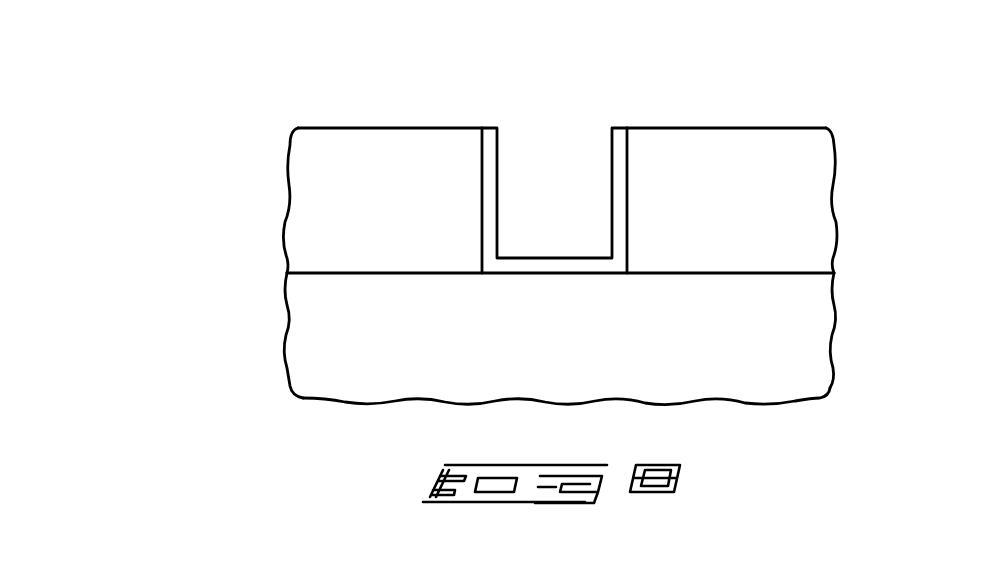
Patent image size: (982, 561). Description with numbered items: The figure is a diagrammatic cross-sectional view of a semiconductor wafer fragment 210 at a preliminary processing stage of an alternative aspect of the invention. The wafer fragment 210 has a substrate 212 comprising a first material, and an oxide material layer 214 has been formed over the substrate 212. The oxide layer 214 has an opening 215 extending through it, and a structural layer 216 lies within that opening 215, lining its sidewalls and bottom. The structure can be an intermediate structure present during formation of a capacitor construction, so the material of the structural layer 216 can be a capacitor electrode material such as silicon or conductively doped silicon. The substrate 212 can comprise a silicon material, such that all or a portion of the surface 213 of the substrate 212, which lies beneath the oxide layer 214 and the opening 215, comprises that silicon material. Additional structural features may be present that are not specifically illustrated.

The wafer fragment 210 is at (172, 186).
The substrate 212 is at (787, 371).
The surface 213 is at (421, 284).
The oxide material layer 214 is at (413, 229).
The opening 215 is at (554, 138).
The structural layer 216 is at (617, 165).